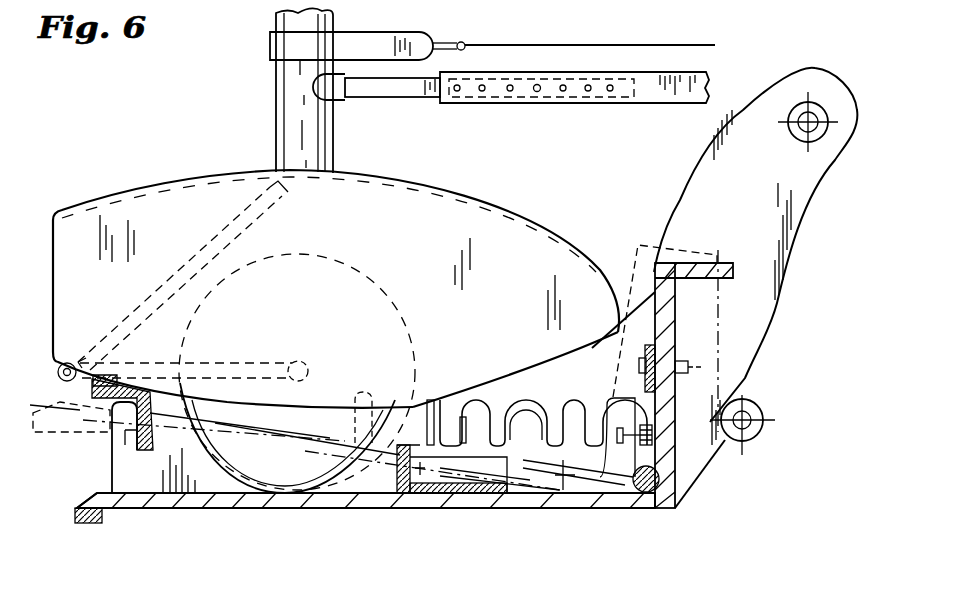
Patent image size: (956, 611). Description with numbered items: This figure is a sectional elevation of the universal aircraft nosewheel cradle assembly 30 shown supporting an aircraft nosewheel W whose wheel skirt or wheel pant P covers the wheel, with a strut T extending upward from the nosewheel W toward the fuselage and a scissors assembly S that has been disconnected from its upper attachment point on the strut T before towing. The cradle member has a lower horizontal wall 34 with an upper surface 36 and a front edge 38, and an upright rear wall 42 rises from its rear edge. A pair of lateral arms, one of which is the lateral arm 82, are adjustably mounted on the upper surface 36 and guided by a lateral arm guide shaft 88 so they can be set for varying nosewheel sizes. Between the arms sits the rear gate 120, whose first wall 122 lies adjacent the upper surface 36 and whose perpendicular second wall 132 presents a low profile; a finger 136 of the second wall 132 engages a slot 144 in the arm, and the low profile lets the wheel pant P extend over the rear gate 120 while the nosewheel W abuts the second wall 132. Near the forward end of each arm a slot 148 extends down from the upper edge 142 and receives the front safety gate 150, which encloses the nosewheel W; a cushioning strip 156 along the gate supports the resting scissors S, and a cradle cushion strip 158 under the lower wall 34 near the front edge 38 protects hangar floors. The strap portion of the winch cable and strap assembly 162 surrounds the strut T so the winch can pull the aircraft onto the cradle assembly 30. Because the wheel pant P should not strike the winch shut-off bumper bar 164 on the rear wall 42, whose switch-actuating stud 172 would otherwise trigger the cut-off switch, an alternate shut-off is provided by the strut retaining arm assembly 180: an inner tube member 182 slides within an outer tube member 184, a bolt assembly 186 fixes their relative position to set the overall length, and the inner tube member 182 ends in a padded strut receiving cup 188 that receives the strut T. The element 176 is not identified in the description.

The strut T is at (293, 113).
The wheel skirt or wheel pant P is at (167, 203).
The scissors assembly S is at (130, 313).
The nosewheel W is at (350, 277).
The winch cable and strap assembly 162 is at (265, 48).
The padded strut receiving cup 188 is at (335, 96).
The inner tube member 182 is at (410, 97).
The strut retaining arm assembly 180 is at (517, 115).
The bolt assembly 186 is at (538, 86).
The outer tube member 184 is at (687, 70).
The winch shut-off bumper bar 164 is at (634, 338).
The upright rear wall 42 is at (676, 299).
The fastener 176 is at (675, 358).
The switch-actuating stud 172 is at (690, 365).
The cushioning strip 156 is at (93, 382).
The front safety gate 150 is at (145, 395).
The slot 148 is at (137, 445).
The upper surface 36 is at (133, 490).
The front edge 38 is at (77, 508).
The cradle cushion strip 158 is at (102, 523).
The lower horizontal wall 34 is at (250, 505).
The universal aircraft nosewheel cradle assembly 30 is at (393, 540).
The second wall 132 is at (397, 467).
The rear gate 120 is at (414, 495).
The first wall 122 is at (486, 495).
The lateral arm 82 is at (562, 462).
The lateral arm guide shaft 88 is at (647, 497).
The finger 136 is at (415, 423).
The slot 144 is at (550, 396).
The upper edge 142 is at (571, 393).